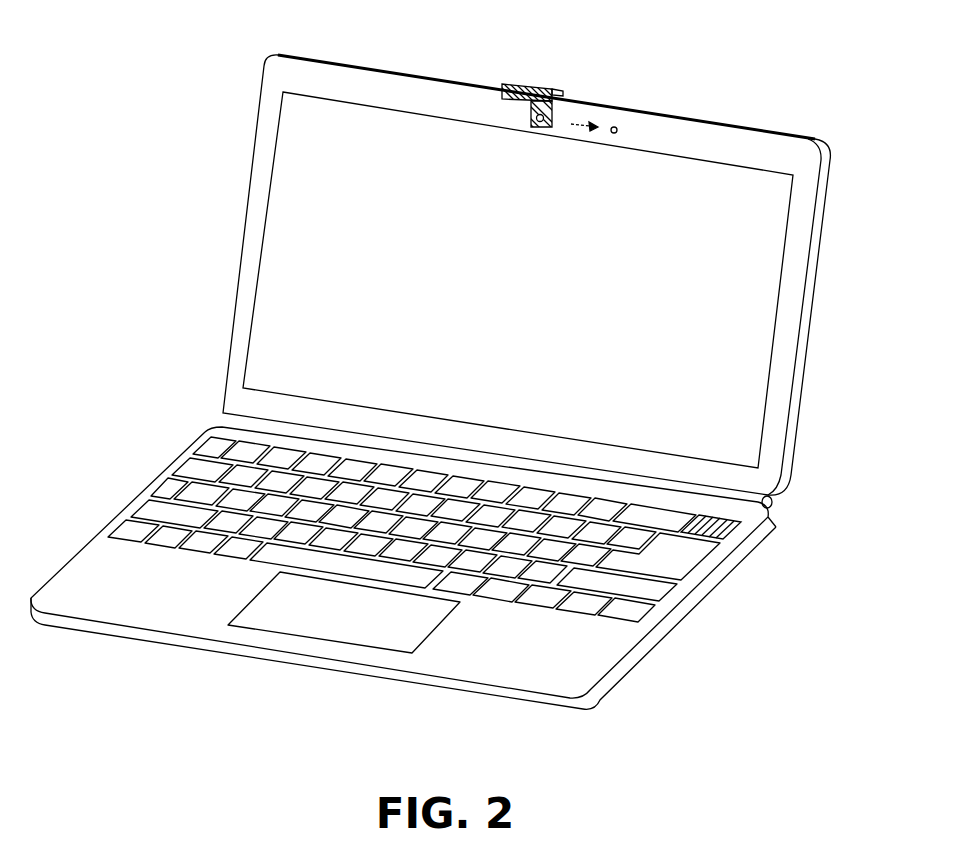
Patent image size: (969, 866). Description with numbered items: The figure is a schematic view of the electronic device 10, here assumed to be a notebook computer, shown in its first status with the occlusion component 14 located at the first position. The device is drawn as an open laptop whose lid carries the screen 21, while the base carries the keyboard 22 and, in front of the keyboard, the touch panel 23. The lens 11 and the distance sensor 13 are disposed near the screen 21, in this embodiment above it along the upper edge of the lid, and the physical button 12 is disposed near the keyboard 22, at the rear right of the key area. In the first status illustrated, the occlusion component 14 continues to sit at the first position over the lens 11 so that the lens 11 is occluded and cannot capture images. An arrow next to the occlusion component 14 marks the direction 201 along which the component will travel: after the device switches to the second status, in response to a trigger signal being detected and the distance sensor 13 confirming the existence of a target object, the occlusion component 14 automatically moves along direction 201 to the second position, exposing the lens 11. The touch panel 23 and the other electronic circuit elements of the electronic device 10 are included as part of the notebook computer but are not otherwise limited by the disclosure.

The electronic device 10 is at (787, 75).
The lens 11 is at (533, 130).
The physical button 12 is at (736, 527).
The distance sensor 13 is at (615, 126).
The occlusion component 14 is at (527, 86).
The direction 201 is at (580, 128).
The screen 21 is at (778, 316).
The keyboard 22 is at (648, 612).
The touch panel 23 is at (312, 628).